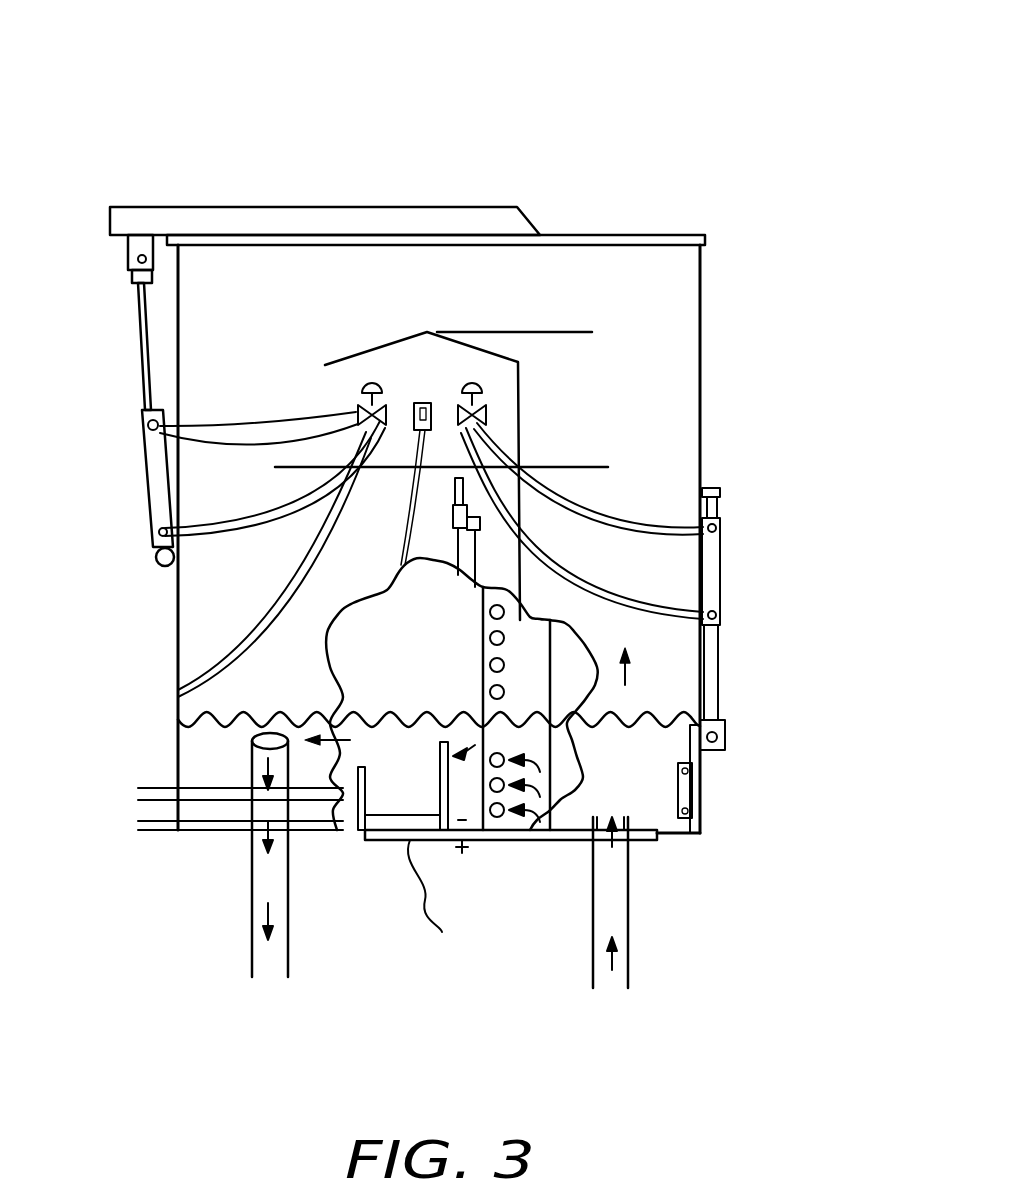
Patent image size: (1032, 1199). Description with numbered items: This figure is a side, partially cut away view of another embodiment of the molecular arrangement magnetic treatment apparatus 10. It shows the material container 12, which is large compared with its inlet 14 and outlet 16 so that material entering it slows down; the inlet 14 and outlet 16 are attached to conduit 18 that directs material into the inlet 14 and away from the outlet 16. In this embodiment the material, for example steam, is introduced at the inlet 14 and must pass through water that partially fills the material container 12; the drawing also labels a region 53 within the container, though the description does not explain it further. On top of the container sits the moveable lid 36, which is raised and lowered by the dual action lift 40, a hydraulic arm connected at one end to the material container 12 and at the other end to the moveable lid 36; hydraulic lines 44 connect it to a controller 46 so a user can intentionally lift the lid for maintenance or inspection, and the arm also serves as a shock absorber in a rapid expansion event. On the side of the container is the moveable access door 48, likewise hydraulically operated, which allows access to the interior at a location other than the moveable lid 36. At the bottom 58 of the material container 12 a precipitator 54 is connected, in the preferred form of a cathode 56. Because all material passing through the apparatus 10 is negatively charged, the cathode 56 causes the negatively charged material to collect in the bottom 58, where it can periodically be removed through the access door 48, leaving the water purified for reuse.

The molecular arrangement magnetic treatment apparatus 10 is at (802, 64).
The material container 12 is at (678, 342).
The inlet 14 is at (630, 843).
The outlet 16 is at (262, 741).
The conduit 18 is at (250, 938).
The moveable lid 36 is at (290, 207).
The dual action lift 40 is at (143, 452).
The hydraulic lines 44 is at (213, 443).
The controller 46 is at (377, 377).
The moveable access door 48 is at (722, 556).
The foam 53 is at (412, 737).
The precipitator 54 is at (386, 855).
The cathode 56 is at (417, 843).
The bottom 58 is at (530, 840).